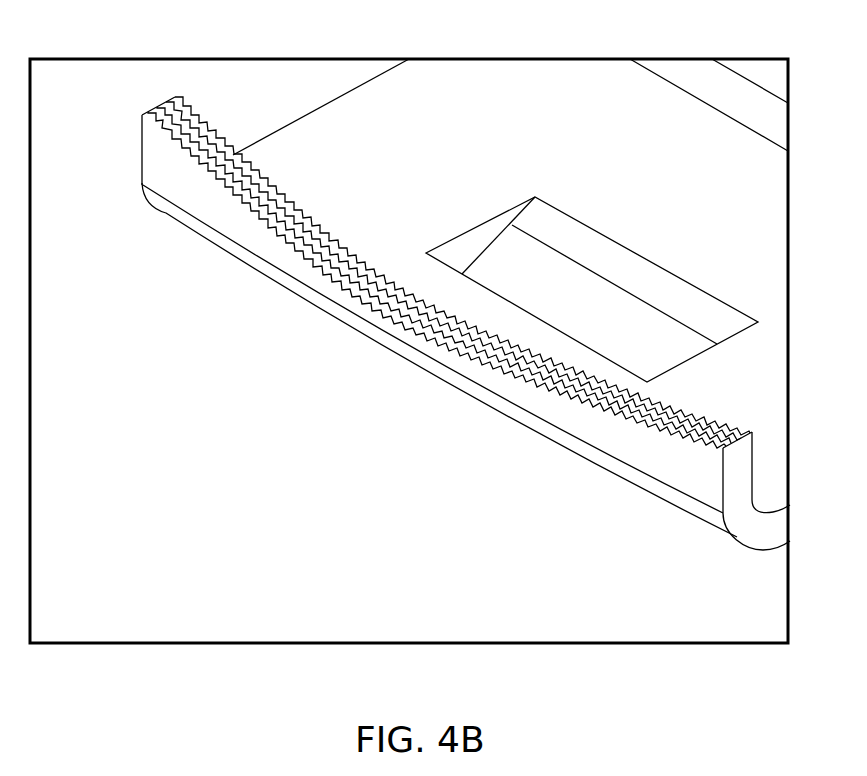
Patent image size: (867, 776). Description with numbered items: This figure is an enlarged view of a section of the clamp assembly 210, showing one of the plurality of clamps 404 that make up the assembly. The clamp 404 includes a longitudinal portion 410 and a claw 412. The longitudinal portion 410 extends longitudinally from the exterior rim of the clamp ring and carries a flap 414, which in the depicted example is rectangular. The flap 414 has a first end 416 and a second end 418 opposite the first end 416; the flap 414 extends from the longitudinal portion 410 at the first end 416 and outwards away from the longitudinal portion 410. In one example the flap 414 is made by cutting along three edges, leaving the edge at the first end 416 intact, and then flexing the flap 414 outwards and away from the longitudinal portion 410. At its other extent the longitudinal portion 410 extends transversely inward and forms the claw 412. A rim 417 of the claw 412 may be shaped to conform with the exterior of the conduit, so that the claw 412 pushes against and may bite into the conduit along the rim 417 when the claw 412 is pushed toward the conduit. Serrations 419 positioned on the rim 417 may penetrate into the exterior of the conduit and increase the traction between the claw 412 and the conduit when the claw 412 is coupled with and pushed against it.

The clamp assembly 210 is at (247, 103).
The clamp 404 is at (613, 35).
The longitudinal portion 410 is at (372, 125).
The claw 412 is at (692, 470).
The flap 414 is at (655, 330).
The first end 416 is at (600, 287).
The rim 417 is at (713, 427).
The second end 418 is at (513, 293).
The serrations 419 is at (292, 232).